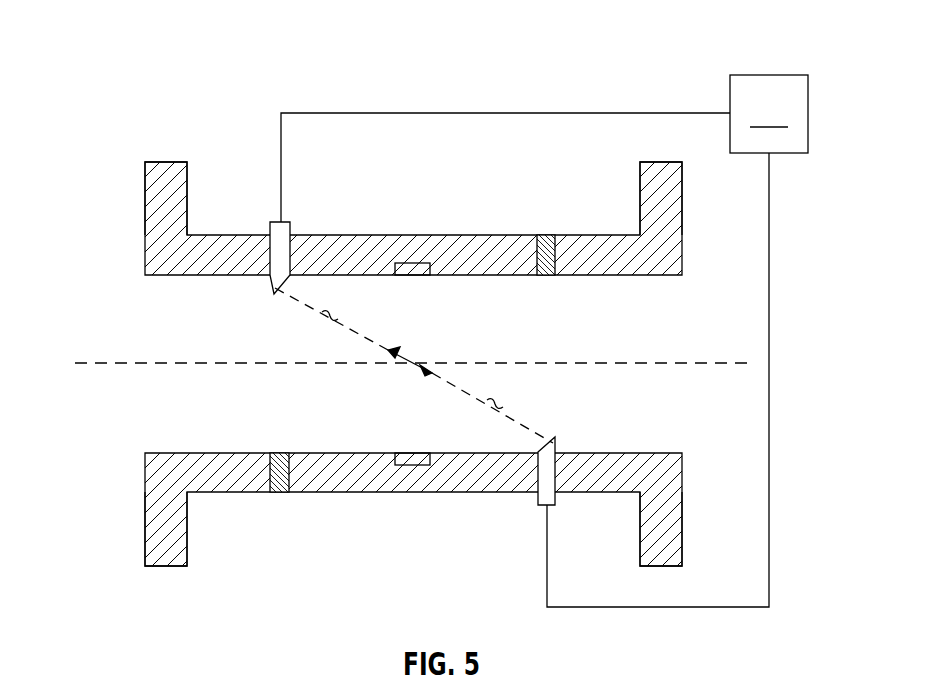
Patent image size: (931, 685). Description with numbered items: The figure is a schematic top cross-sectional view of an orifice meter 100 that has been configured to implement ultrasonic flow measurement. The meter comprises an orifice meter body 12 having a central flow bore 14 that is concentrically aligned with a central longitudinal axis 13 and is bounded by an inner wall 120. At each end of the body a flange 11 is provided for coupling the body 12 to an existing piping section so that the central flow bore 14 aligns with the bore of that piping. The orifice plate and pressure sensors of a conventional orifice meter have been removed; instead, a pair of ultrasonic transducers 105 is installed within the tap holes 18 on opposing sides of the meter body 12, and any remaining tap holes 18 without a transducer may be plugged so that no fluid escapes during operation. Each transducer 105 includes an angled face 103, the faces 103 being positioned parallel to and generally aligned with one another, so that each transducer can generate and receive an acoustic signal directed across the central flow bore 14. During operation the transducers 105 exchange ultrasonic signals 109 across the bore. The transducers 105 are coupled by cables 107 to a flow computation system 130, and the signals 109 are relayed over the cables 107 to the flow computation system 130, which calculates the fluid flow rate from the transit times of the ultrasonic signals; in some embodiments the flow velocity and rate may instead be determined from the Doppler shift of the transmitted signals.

The orifice meter 100 is at (157, 68).
The flange 11 is at (145, 196).
The orifice meter body 12 is at (386, 235).
The central longitudinal axis 13 is at (100, 362).
The central flow bore 14 is at (163, 413).
The tap holes 18 is at (268, 246).
The angled faces 103 is at (278, 293).
The ultrasonic transducers 105 is at (291, 228).
The cables 107 is at (281, 141).
The ultrasonic signals 109 is at (417, 353).
The inner wall 120 is at (615, 453).
The flow computation system 130 is at (769, 114).